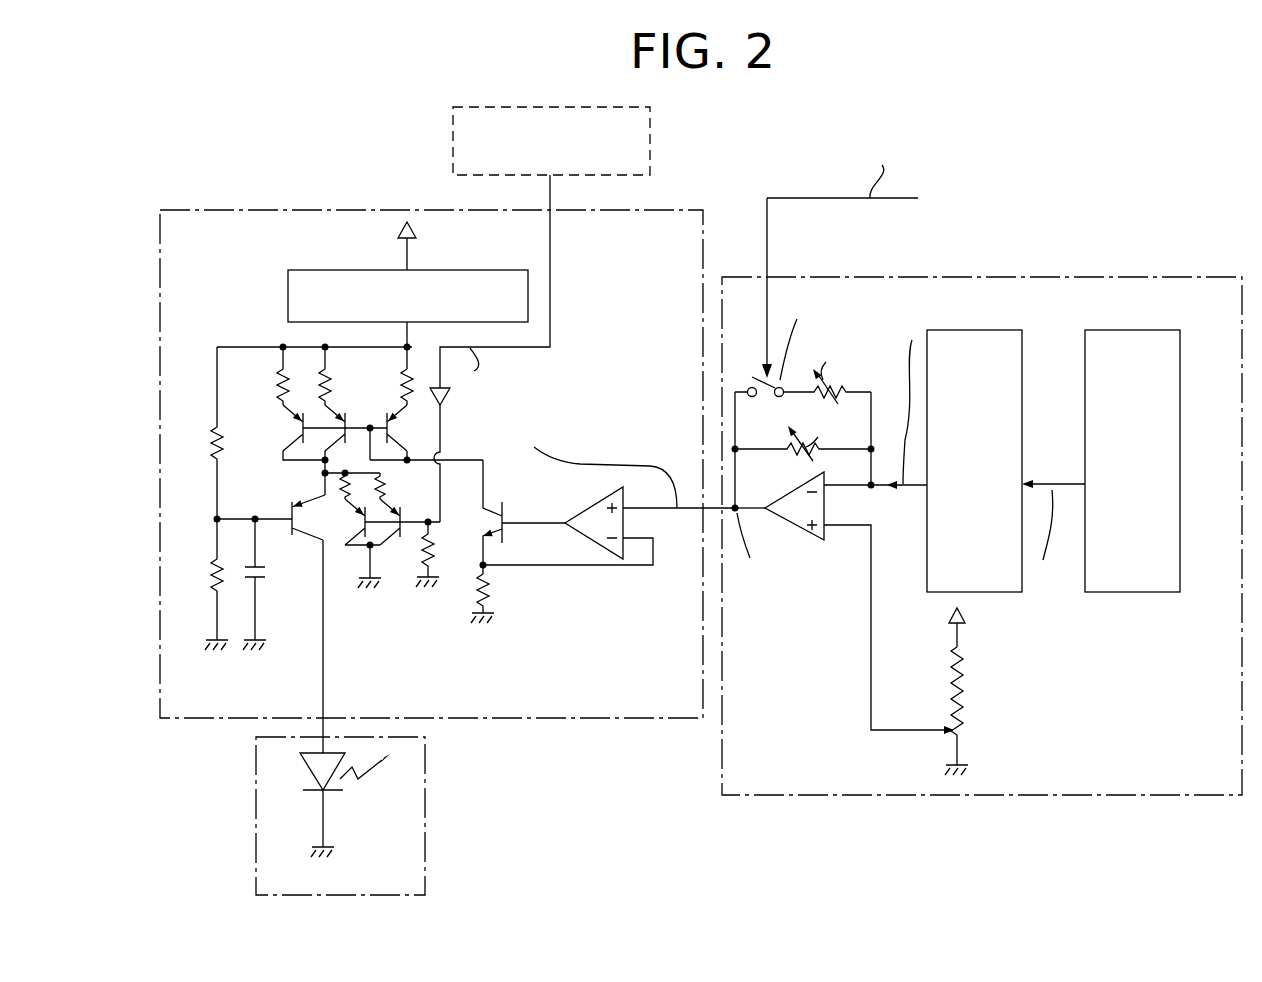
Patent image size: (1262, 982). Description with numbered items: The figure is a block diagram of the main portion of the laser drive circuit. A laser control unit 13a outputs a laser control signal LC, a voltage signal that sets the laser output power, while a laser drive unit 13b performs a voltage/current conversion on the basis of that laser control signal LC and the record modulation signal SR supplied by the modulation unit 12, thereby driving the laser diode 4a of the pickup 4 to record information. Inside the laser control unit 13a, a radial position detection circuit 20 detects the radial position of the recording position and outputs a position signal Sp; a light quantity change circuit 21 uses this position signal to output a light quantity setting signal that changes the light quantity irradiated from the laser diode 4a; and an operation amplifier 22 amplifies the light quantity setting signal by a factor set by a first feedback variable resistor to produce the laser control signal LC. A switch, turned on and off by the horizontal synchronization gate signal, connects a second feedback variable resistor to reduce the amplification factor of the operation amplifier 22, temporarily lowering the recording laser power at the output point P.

The modulation unit 12 is at (655, 129).
The laser control unit 13a is at (982, 277).
The laser drive unit 13b is at (170, 209).
The radial position detection circuit 20 is at (1120, 330).
The light quantity change circuit 21 is at (972, 330).
The operation amplifier 22 is at (813, 541).
The pickup 4 is at (425, 880).
The laser diode 4a is at (296, 770).